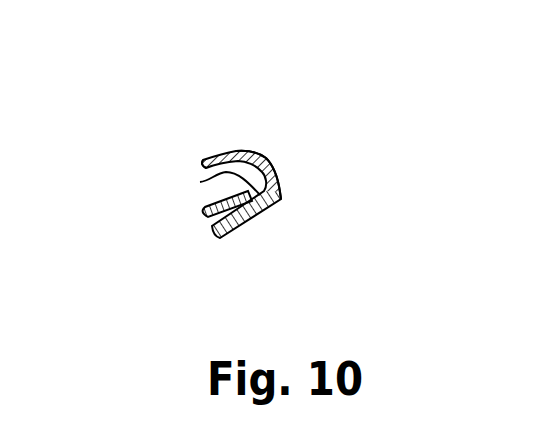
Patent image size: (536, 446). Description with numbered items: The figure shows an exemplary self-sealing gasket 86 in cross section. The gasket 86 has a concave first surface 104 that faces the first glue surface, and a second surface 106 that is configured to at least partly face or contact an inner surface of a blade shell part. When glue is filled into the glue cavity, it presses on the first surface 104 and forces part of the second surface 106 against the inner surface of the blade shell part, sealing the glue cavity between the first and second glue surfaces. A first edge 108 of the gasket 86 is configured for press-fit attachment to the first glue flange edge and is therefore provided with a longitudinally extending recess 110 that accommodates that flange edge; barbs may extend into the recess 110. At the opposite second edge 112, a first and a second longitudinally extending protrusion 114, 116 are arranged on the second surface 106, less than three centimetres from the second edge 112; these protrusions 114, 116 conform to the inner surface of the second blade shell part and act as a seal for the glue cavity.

The gasket 86 is at (276, 191).
The concave first surface 104 is at (200, 182).
The second surface 106 is at (265, 159).
The first edge 108 is at (207, 227).
The longitudinally extending recess 110 is at (217, 224).
The second edge 112 is at (206, 160).
The first longitudinally extending protrusion 114 is at (212, 156).
The second longitudinally extending protrusion 116 is at (238, 152).